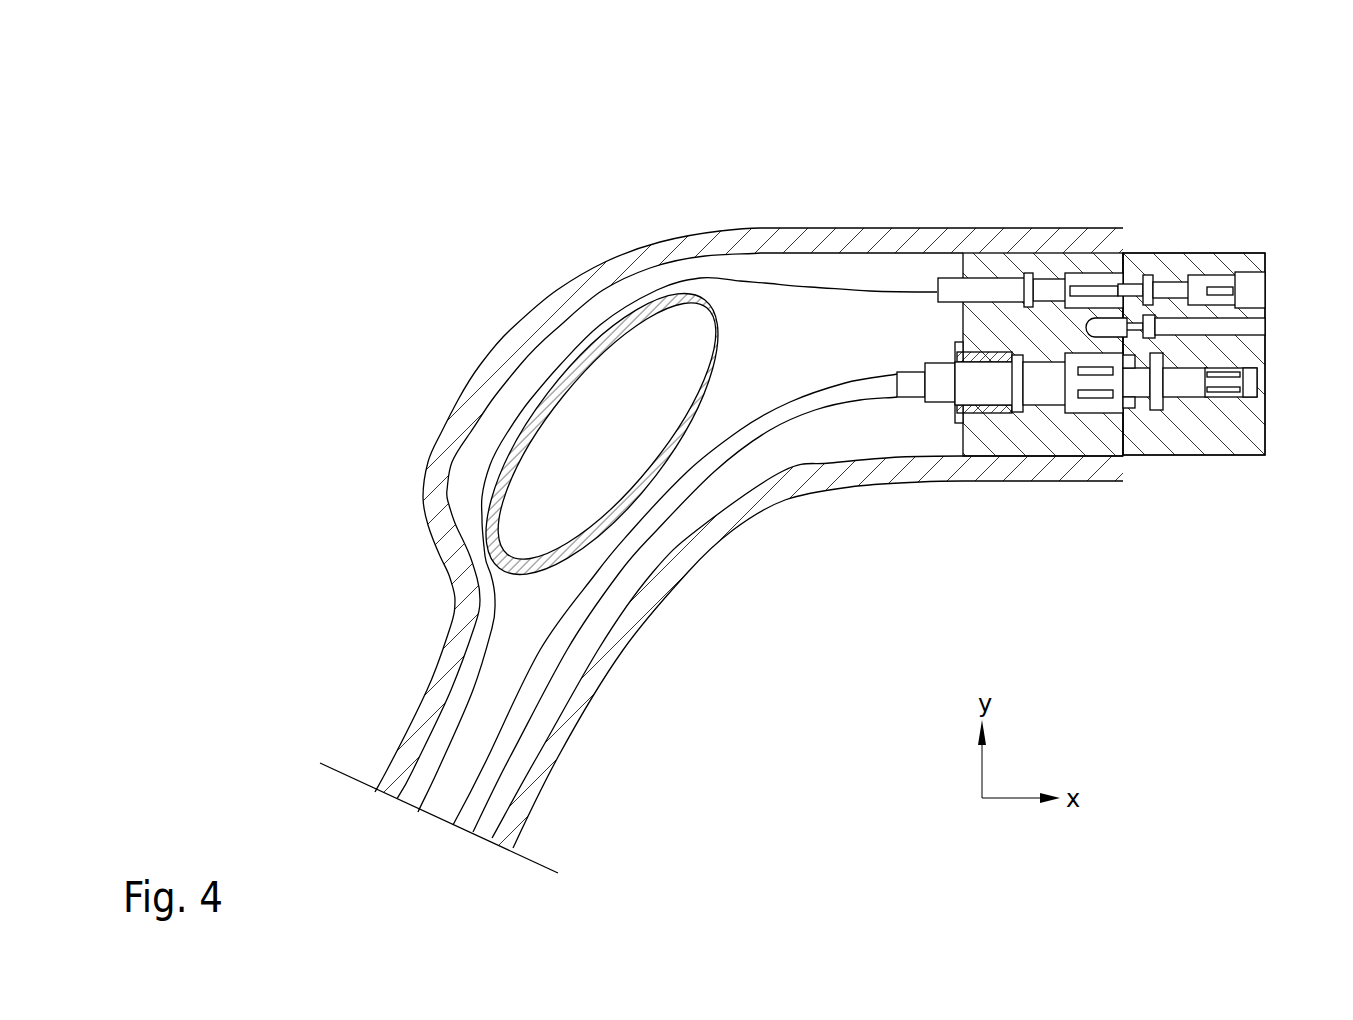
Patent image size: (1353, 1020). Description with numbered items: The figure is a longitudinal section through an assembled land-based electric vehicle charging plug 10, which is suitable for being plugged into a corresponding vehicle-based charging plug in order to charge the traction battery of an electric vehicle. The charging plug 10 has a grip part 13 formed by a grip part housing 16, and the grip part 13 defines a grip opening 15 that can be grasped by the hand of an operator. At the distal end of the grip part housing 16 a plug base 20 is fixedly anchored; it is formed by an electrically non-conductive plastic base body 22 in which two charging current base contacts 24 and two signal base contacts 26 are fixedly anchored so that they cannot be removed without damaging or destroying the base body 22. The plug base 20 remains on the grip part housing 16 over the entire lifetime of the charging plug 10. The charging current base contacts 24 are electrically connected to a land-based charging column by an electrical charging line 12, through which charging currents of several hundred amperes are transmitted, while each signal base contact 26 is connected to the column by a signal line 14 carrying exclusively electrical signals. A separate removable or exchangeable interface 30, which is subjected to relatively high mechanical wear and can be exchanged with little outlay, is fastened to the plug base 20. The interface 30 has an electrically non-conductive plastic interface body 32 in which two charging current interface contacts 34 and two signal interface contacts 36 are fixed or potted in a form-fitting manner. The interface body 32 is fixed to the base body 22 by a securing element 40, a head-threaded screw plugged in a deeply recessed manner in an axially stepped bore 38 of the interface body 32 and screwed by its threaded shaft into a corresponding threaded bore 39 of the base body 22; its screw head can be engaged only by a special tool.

The electric vehicle charging plug 10 is at (871, 95).
The electrical charging line 12 is at (786, 418).
The grip part 13 is at (531, 247).
The signal line 14 is at (765, 283).
The grip opening 15 is at (568, 412).
The grip part housing 16 is at (934, 238).
The plug base 20 is at (1022, 214).
The base body 22 is at (983, 265).
The charging current base contact 24 is at (1034, 410).
The signal base contact 26 is at (1044, 265).
The interface 30 is at (1215, 213).
The interface body 32 is at (1163, 263).
The charging current interface contact 34 is at (1192, 422).
The signal interface contact 36 is at (1183, 265).
The axially stepped bore 38 is at (1240, 316).
The threaded bore 39 is at (1112, 321).
The securing element 40 is at (1135, 297).